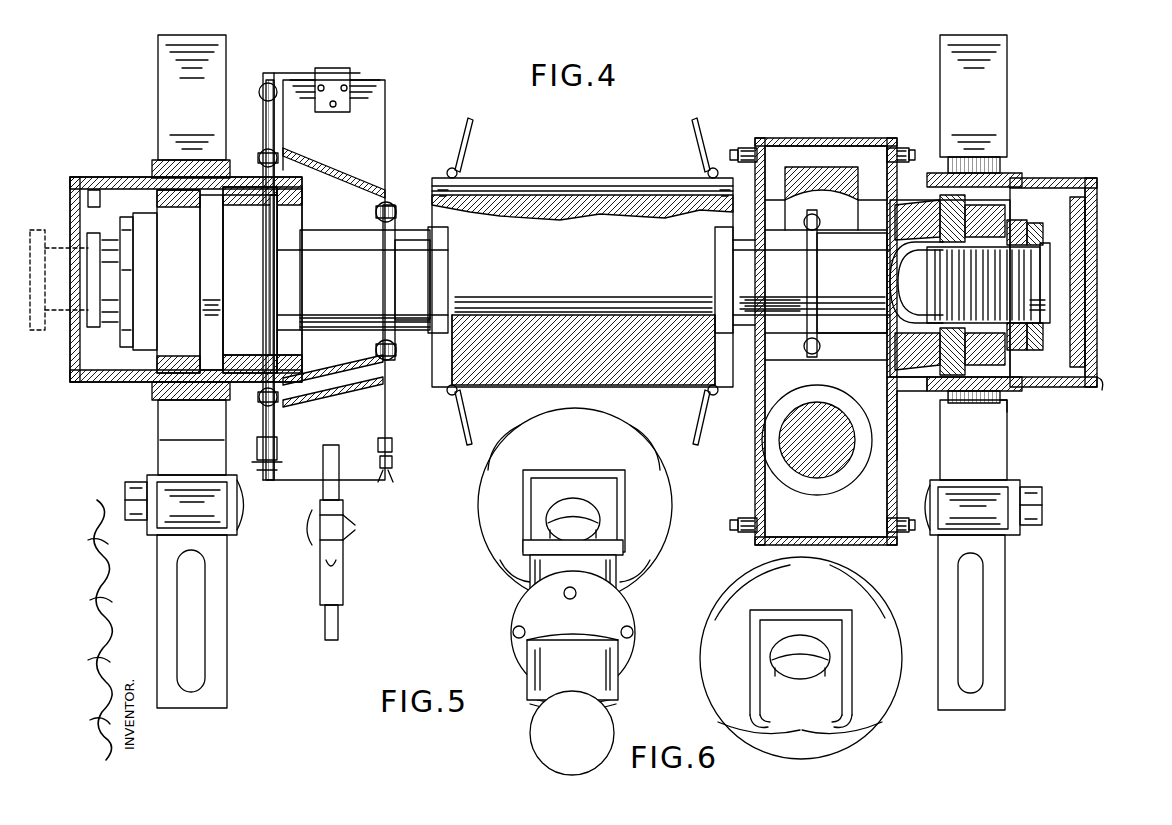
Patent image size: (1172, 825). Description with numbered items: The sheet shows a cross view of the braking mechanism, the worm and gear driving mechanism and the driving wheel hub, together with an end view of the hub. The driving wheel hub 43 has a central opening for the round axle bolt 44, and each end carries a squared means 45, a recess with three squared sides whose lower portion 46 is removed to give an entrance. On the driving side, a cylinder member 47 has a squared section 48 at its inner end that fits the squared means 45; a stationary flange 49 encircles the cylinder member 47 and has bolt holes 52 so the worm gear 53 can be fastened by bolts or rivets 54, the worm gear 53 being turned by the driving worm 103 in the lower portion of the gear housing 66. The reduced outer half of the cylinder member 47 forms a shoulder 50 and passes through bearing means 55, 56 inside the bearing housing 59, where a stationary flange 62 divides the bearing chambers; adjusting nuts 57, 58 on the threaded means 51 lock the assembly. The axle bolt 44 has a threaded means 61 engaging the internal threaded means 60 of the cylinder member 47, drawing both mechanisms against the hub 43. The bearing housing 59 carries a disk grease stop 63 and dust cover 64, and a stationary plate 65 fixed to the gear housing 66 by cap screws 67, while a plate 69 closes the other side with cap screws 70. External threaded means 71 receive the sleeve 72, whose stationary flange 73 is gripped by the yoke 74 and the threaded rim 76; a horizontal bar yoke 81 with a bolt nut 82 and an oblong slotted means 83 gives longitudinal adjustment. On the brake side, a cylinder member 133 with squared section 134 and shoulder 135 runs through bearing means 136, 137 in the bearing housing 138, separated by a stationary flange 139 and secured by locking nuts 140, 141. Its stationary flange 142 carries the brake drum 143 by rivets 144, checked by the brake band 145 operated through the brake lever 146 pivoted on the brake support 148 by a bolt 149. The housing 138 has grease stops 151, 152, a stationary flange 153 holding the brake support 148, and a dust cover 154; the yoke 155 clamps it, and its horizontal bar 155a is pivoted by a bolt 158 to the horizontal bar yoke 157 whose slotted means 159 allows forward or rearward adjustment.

In FIG. 4, the driving wheel hub 43 is at (560, 190).
In FIG. 5, the driving wheel hub 43 is at (488, 498).
In FIG. 6, the driving wheel hub 43 is at (722, 615).
In FIG. 4, the axle bolt 44 is at (88, 315).
In FIG. 5, the squared means 45 is at (612, 498).
In FIG. 6, the squared means 45 is at (832, 647).
In FIG. 4, the lower portion 46 is at (440, 360).
In FIG. 6, the lower portion 46 is at (810, 720).
In FIG. 4, the cylinder member 47 is at (862, 335).
In FIG. 5, the cylinder member 47 is at (515, 588).
In FIG. 4, the squared section 48 is at (718, 275).
In FIG. 5, the squared section 48 is at (525, 548).
In FIG. 4, the stationary flange 49 is at (812, 268).
In FIG. 5, the stationary flange 49 is at (522, 612).
In FIG. 4, the shoulder 50 is at (868, 335).
In FIG. 5, the shoulder 50 is at (527, 680).
In FIG. 5, the threaded means 51 is at (530, 718).
In FIG. 5, the bolt holes 52 is at (514, 636).
In FIG. 4, the worm gear 53 is at (820, 167).
In FIG. 4, the bolts or rivets 54 is at (825, 230).
In FIG. 4, the bearing means 55 is at (900, 188).
In FIG. 4, the bearing means 56 is at (995, 358).
In FIG. 4, the adjusting nut 57 is at (1020, 228).
In FIG. 4, the locking nut 58 is at (1043, 228).
In FIG. 4, the bearing housing 59 is at (1060, 182).
In FIG. 4, the threaded means 60 is at (1045, 262).
In FIG. 4, the threaded means 61 is at (1030, 303).
In FIG. 4, the stationary flange 62 is at (920, 390).
In FIG. 4, the disk grease stop 63 is at (1080, 340).
In FIG. 4, the dust cover 64 is at (1100, 392).
In FIG. 4, the stationary plate 65 is at (892, 140).
In FIG. 4, the gear housing 66 is at (800, 140).
In FIG. 4, the cap screws 67 is at (903, 146).
In FIG. 4, the plate 69 is at (756, 146).
In FIG. 4, the cap screws 70 is at (722, 148).
In FIG. 4, the threaded means 71 is at (1030, 178).
In FIG. 4, the sleeve 72 is at (1020, 393).
In FIG. 4, the stationary flange 73 is at (975, 165).
In FIG. 4, the yoke 74 is at (960, 405).
In FIG. 4, the threaded rim 76 is at (1007, 403).
In FIG. 4, the horizontal bar yoke 81 is at (995, 585).
In FIG. 4, the bolt nut 82 is at (1040, 504).
In FIG. 4, the oblong slotted means 83 is at (972, 652).
In FIG. 4, the driving worm 103 is at (818, 488).
In FIG. 4, the cylinder member 133 is at (342, 238).
In FIG. 4, the squared section 134 is at (440, 275).
In FIG. 4, the shoulder 135 is at (282, 250).
In FIG. 4, the bearing means 136 is at (258, 296).
In FIG. 4, the bearing means 137 is at (178, 178).
In FIG. 4, the bearing housing 138 is at (135, 182).
In FIG. 4, the stationary flange 139 is at (215, 207).
In FIG. 4, the adjusting nut 140 is at (145, 222).
In FIG. 4, the locking nut 141 is at (145, 372).
In FIG. 4, the stationary flange 142 is at (384, 265).
In FIG. 4, the brake drum 143 is at (345, 186).
In FIG. 4, the rivets 144 is at (395, 210).
In FIG. 4, the brake band 145 is at (380, 120).
In FIG. 4, the brake lever 146 is at (338, 548).
In FIG. 4, the brake support 148 is at (262, 98).
In FIG. 4, the bolt 149 is at (393, 465).
In FIG. 4, the grease stop 151 is at (296, 360).
In FIG. 4, the grease stop 152 is at (88, 200).
In FIG. 4, the stationary flange 153 is at (262, 402).
In FIG. 4, the dust cover 154 is at (78, 178).
In FIG. 4, the yoke 155 is at (158, 402).
In FIG. 4, the horizontal bar 155a is at (162, 458).
In FIG. 4, the horizontal bar yoke 157 is at (215, 580).
In FIG. 4, the bolt 158 is at (127, 500).
In FIG. 4, the slotted means 159 is at (192, 645).